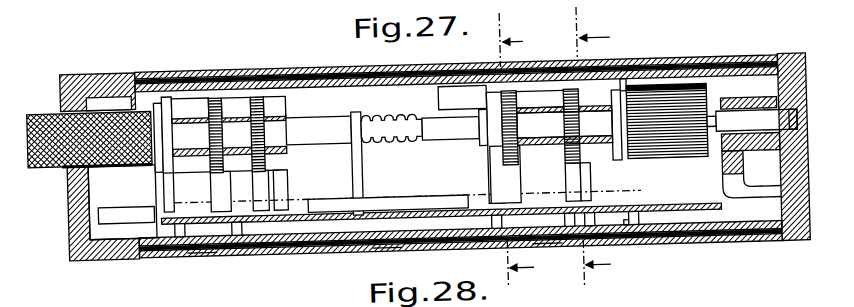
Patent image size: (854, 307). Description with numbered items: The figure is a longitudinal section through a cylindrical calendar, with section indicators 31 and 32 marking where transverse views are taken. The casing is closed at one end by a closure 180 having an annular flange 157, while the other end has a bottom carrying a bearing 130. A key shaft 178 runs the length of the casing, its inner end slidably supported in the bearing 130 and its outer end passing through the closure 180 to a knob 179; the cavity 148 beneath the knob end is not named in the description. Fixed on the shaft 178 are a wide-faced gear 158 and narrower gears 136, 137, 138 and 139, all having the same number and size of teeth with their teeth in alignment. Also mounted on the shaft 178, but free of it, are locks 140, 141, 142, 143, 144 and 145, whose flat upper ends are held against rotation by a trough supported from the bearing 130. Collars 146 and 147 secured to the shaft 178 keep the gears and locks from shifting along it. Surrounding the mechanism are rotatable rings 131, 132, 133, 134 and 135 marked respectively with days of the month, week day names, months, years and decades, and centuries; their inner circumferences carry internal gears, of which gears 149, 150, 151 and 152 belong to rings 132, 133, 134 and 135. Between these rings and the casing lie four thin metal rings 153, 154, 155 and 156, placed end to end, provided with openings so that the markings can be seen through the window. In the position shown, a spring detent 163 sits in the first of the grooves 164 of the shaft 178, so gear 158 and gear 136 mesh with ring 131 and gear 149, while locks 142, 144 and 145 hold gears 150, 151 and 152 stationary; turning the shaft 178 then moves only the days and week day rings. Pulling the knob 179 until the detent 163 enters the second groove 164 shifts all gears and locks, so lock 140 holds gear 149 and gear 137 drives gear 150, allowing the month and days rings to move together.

The bearing 130 is at (749, 121).
The rotatable ring 131 is at (639, 84).
The rotatable ring 132 is at (564, 84).
The rotatable ring 133 is at (540, 256).
The rotatable ring 134 is at (332, 69).
The rotatable ring 135 is at (145, 72).
The gear 136 is at (585, 162).
The gear 137 is at (523, 160).
The gear 138 is at (294, 76).
The gear 139 is at (215, 86).
The lock 140 is at (620, 178).
The lock 141 is at (579, 186).
The lock 142 is at (498, 164).
The lock 143 is at (286, 174).
The lock 144 is at (241, 215).
The lock 145 is at (182, 165).
The collar 146 is at (470, 141).
The collar 147 is at (305, 64).
The cavity 148 is at (150, 164).
The internal gear 149 is at (565, 101).
The internal gear 150 is at (492, 87).
The internal gear 151 is at (257, 87).
The internal gear 152 is at (175, 73).
The thin metal ring 153 is at (730, 108).
The thin metal ring 154 is at (378, 244).
The thin metal ring 155 is at (367, 251).
The thin metal ring 156 is at (194, 244).
The annular extension or flange 157 is at (100, 68).
The gear 158 is at (695, 69).
The spring detent 163 is at (363, 120).
The grooves 164 is at (402, 144).
The key shaft 178 is at (308, 127).
The knob 179 is at (49, 100).
The closure 180 is at (68, 203).
The section line 31 is at (596, 144).
The section line 32 is at (517, 150).